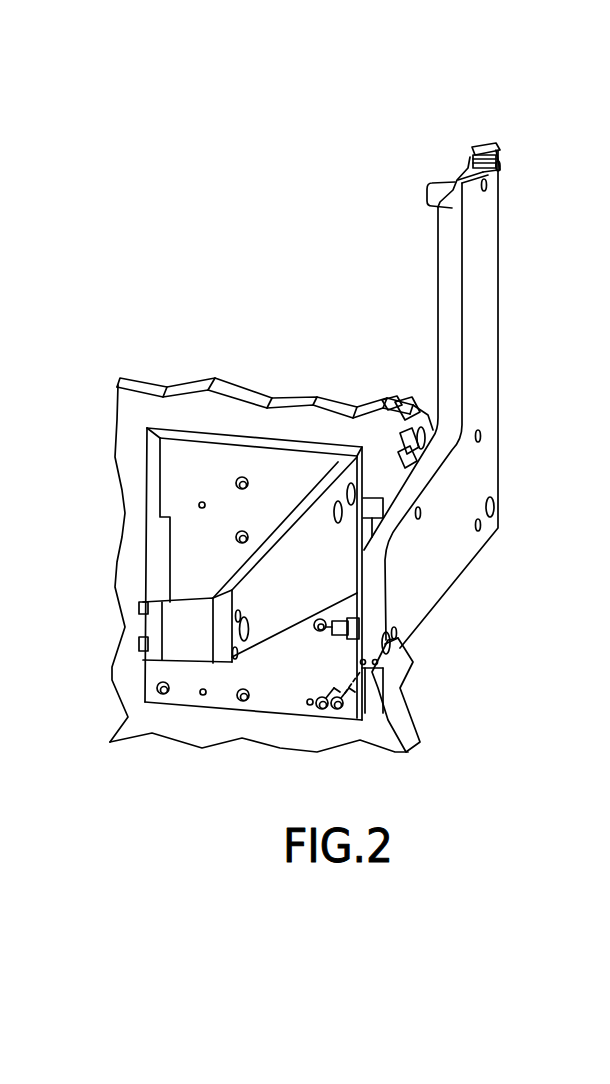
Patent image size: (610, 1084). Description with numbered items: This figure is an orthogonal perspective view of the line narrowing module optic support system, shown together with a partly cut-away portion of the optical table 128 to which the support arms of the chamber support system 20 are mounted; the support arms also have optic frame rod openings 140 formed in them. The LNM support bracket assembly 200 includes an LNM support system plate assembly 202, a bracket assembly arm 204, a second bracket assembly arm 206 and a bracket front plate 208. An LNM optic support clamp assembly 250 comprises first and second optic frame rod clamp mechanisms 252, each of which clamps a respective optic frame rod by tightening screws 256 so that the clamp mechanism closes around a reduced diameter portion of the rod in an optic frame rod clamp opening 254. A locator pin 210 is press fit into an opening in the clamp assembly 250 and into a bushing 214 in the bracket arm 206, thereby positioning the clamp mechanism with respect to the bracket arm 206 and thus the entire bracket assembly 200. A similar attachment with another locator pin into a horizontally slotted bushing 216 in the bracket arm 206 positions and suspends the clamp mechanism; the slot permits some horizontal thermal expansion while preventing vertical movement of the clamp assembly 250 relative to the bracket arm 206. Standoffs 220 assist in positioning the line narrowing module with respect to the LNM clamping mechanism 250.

The chamber support system 20 is at (298, 398).
The optical table 128 is at (210, 400).
The optic frame rod openings 140 is at (340, 488).
The LNM support bracket assembly 200 is at (180, 455).
The LNM support system plate assembly 202 is at (155, 672).
The bracket assembly arm 204 is at (153, 498).
The bracket assembly arm 206 is at (275, 630).
The bracket front plate 208 is at (185, 648).
The locator pin 210 is at (330, 650).
The bushing 214 is at (250, 612).
The horizontally slotted bushing 216 is at (346, 531).
The standoffs 220 is at (428, 192).
The LNM optic support clamp assembly 250 is at (487, 355).
The optic frame rod clamp mechanism 252 is at (488, 130).
The optic frame rod clamp opening 254 is at (508, 173).
The screws 256 is at (472, 150).